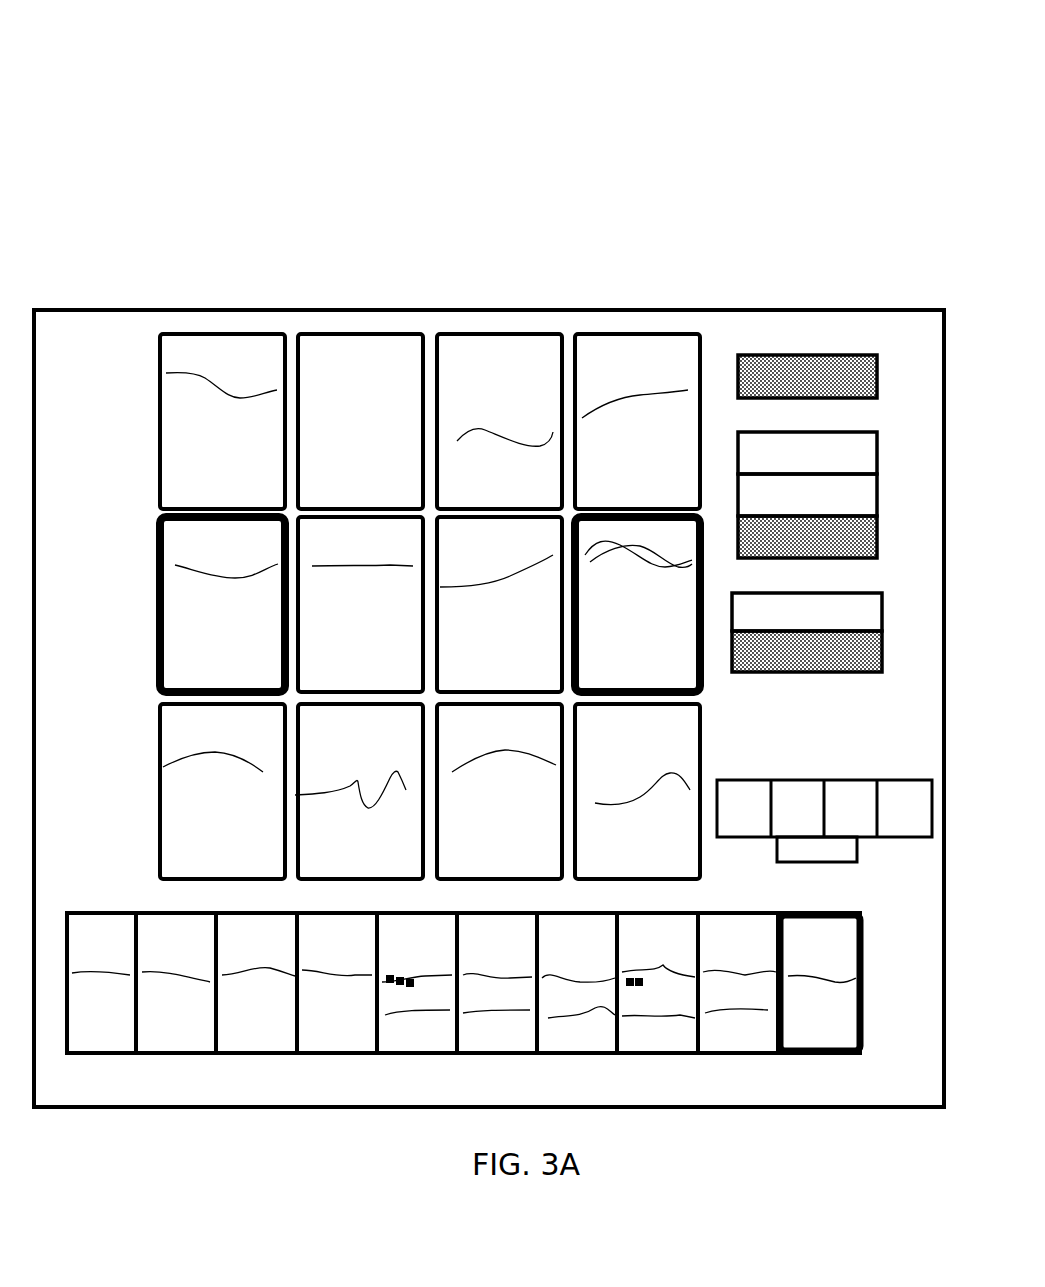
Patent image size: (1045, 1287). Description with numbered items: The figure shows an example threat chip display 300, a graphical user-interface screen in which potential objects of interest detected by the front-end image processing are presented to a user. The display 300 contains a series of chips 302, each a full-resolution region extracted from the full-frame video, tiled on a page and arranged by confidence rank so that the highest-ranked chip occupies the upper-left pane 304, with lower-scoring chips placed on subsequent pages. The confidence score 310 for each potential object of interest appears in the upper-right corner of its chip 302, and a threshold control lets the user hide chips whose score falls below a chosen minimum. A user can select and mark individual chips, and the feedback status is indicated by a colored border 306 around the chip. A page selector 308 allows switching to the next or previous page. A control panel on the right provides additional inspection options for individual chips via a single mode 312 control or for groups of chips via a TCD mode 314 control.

The threat chip display 300 is at (113, 163).
The chip 302 is at (355, 365).
The upper-left pane 304 is at (187, 350).
The colored border 306 is at (630, 505).
The page selector 308 is at (732, 673).
The confidence score 310 is at (416, 345).
The single mode 312 is at (747, 490).
The TCD mode 314 is at (880, 537).